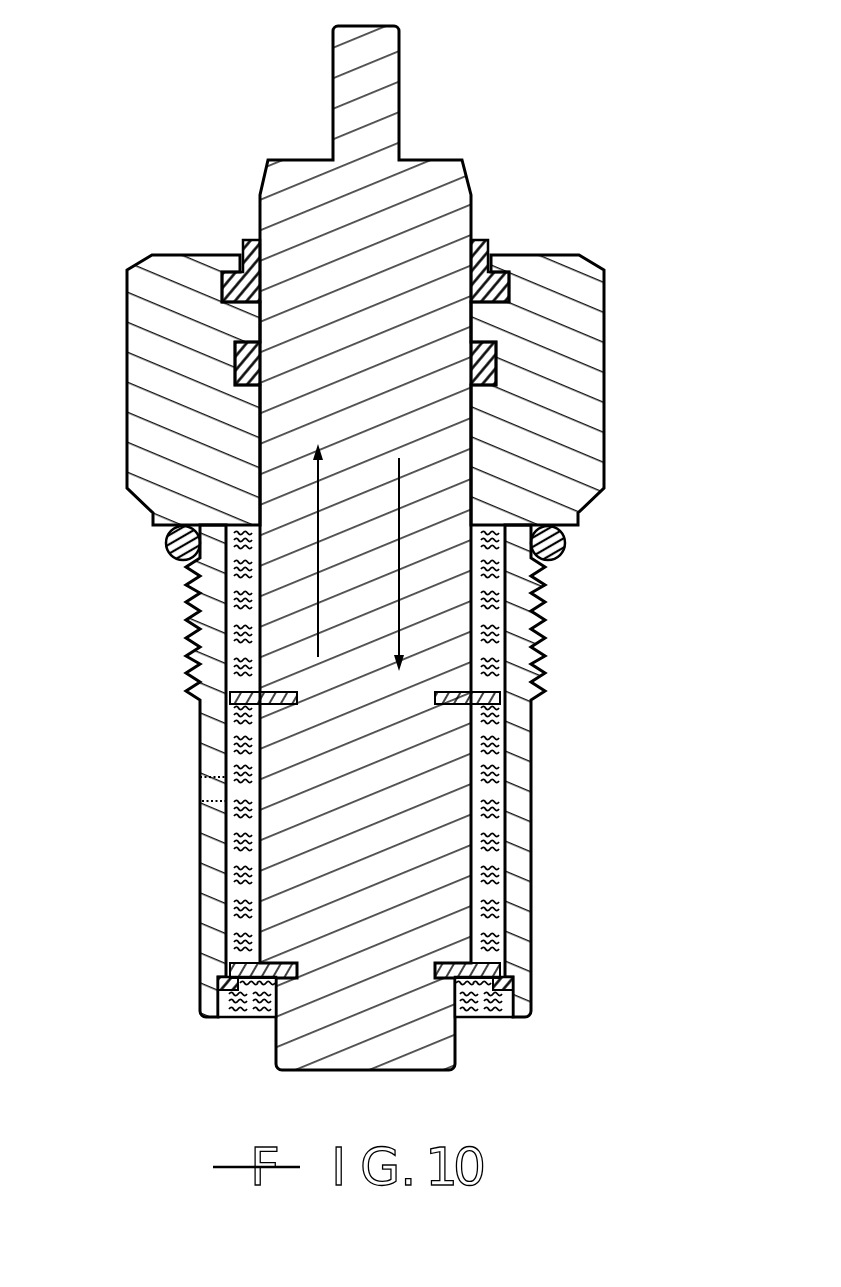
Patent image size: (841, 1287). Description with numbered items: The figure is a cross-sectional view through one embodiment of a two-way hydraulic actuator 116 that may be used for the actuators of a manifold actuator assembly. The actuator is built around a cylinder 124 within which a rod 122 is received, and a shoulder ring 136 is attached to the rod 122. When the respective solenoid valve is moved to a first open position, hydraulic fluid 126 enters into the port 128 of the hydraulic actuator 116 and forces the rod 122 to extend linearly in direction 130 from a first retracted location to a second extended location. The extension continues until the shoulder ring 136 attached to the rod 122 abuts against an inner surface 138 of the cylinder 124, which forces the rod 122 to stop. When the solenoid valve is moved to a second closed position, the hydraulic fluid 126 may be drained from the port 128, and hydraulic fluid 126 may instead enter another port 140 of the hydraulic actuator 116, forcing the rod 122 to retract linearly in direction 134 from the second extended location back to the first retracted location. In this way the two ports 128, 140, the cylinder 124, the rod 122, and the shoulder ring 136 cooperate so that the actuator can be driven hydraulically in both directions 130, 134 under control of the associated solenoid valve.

The hydraulic actuator 116 is at (640, 318).
The rod 122 is at (429, 173).
The cylinder 124 is at (545, 607).
The hydraulic fluid 126 is at (237, 851).
The port 128 is at (470, 1003).
The direction 130 is at (300, 528).
The direction 134 is at (400, 514).
The shoulder ring 136 is at (490, 703).
The inner surface 138 is at (488, 527).
The port 140 is at (207, 786).